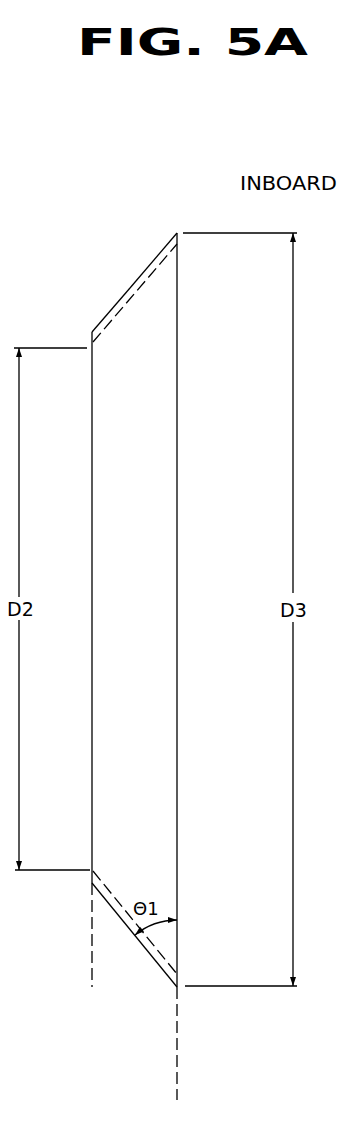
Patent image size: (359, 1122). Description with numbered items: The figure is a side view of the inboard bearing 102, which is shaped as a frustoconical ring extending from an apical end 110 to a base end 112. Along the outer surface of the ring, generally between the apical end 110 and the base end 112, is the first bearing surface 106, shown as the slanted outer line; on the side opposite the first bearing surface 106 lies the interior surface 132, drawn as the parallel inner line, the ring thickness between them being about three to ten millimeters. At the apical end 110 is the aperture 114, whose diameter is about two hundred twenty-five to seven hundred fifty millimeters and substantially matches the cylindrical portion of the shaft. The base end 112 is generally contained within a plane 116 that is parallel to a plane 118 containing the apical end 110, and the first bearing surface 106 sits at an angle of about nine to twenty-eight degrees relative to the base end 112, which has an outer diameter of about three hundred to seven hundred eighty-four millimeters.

The inboard bearing 102 is at (160, 252).
The first bearing surface 106 is at (122, 297).
The apical end 110 is at (92, 333).
The base end 112 is at (177, 233).
The aperture 114 is at (92, 463).
The plane 116 is at (177, 1053).
The plane 118 is at (92, 922).
The interior surface 132 is at (128, 301).